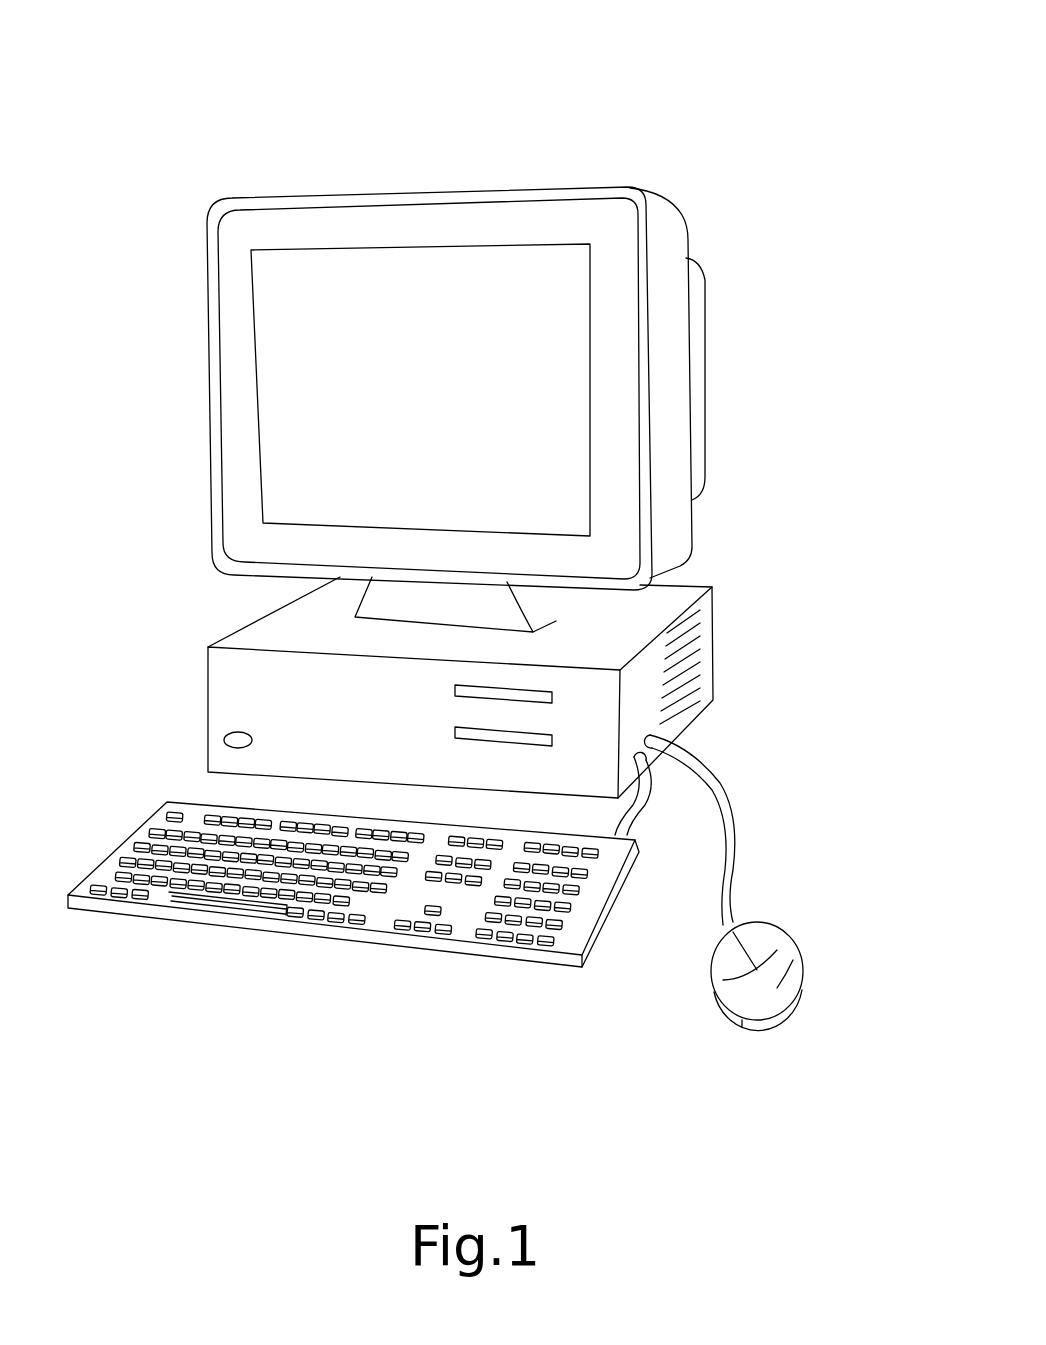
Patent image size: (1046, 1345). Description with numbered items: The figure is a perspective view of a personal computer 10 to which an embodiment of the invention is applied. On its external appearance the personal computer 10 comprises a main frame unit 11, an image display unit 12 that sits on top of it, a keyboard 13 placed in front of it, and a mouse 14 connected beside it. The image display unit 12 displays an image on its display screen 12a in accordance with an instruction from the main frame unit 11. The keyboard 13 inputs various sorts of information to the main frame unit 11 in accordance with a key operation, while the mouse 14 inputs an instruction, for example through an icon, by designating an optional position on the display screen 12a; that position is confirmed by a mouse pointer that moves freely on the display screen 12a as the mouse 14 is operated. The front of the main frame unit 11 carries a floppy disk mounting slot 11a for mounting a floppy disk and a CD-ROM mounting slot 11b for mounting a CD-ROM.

The personal computer 10 is at (588, 128).
The main frame unit 11 is at (688, 670).
The floppy disk mounting slot 11a is at (453, 687).
The CD-ROM mounting slot 11b is at (453, 733).
The image display unit 12 is at (677, 320).
The display screen 12a is at (548, 410).
The keyboard 13 is at (278, 912).
The mouse 14 is at (777, 988).